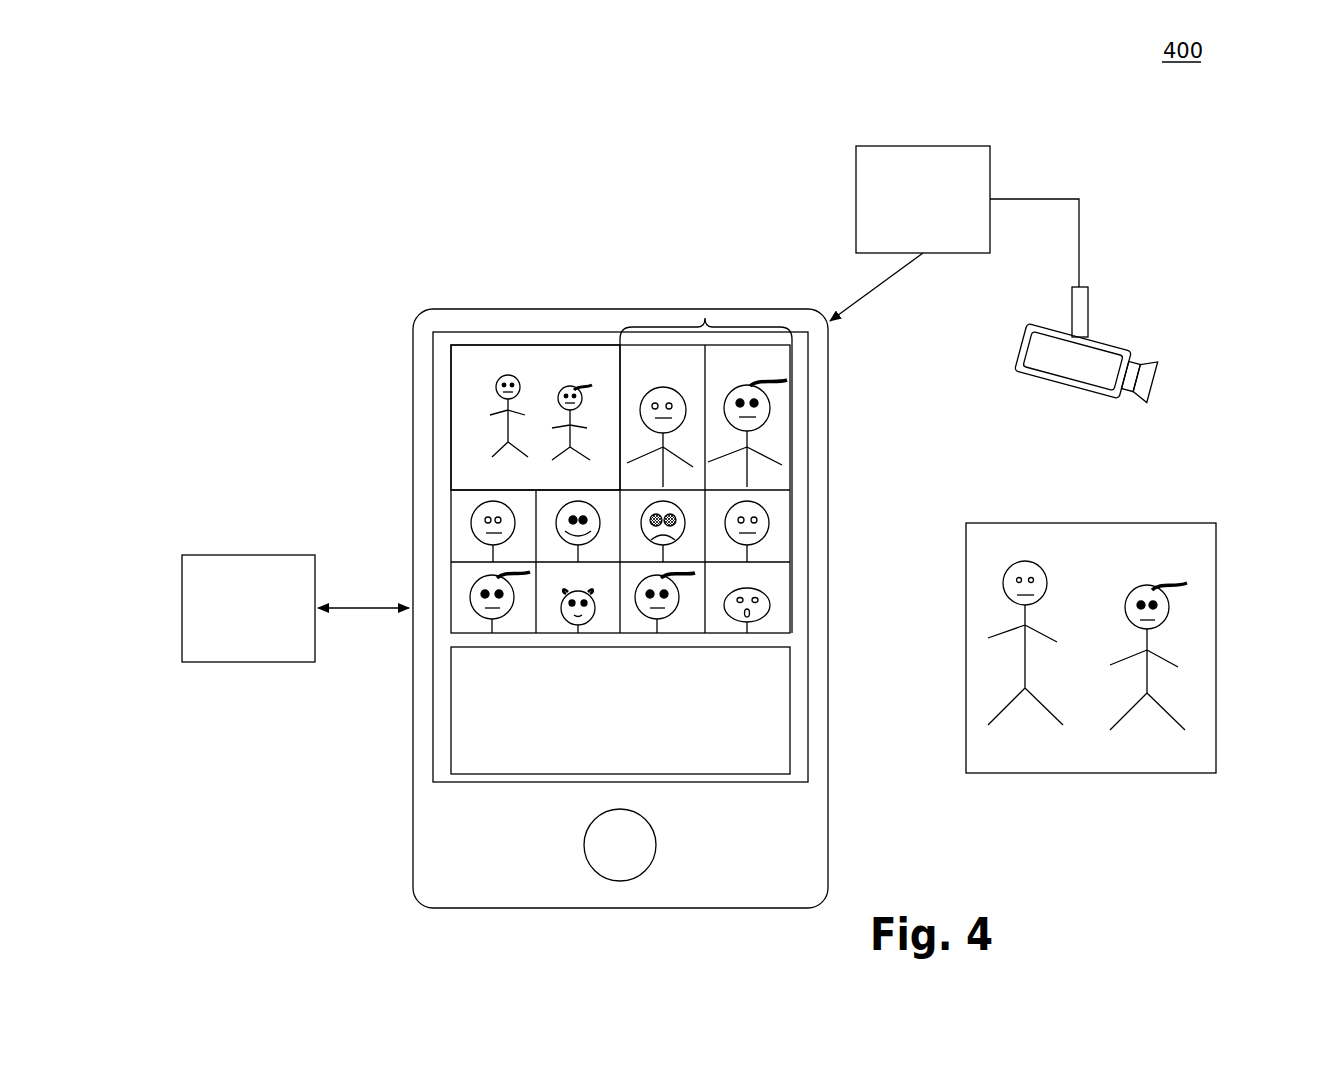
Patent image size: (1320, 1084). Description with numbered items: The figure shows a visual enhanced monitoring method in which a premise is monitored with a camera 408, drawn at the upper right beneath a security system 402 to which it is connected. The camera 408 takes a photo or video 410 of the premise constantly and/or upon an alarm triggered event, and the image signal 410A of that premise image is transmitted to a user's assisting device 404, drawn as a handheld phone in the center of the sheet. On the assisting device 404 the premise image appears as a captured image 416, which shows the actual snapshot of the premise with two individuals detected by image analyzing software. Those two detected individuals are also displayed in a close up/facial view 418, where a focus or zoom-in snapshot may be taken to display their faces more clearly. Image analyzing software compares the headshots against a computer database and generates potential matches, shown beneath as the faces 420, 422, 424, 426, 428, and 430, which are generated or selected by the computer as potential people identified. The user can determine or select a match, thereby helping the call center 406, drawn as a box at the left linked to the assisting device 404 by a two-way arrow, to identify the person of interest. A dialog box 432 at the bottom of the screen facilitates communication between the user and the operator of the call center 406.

The security system 402 is at (923, 140).
The user's assisting device 404 is at (747, 280).
The call center 406 is at (248, 554).
The camera 408 is at (1098, 397).
The photo or video of the premise 410 is at (1133, 520).
The image signal 410A is at (888, 286).
The captured image 416 is at (462, 407).
The close up/facial view 418 is at (705, 326).
The face 420 is at (591, 555).
The face 422 is at (688, 556).
The face 424 is at (783, 532).
The face 426 is at (589, 631).
The face 428 is at (676, 631).
The face 430 is at (783, 602).
The dialog box 432 is at (792, 680).